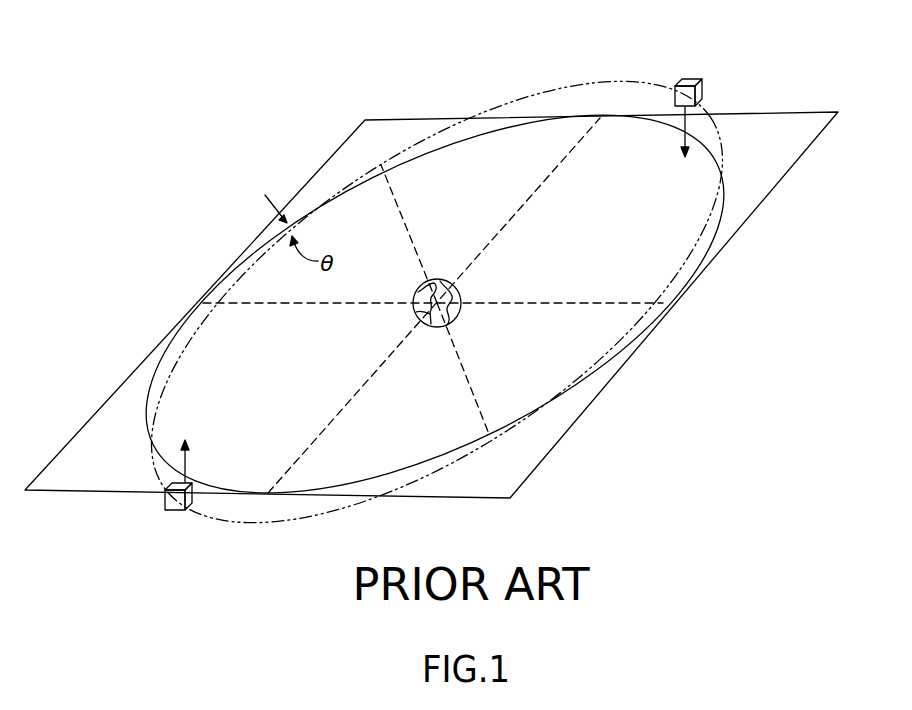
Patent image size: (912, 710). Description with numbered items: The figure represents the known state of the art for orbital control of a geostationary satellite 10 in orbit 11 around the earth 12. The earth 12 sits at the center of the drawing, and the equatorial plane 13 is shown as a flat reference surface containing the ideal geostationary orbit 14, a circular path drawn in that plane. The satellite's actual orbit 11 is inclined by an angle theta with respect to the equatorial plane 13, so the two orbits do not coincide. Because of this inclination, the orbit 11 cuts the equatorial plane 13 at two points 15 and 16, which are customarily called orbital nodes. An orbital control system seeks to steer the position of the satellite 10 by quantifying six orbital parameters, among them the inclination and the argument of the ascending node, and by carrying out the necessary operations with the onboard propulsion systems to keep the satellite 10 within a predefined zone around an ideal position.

The geostationary satellite 10 is at (165, 508).
The orbit 11 is at (530, 100).
The earth 12 is at (462, 297).
The equatorial plane 13 is at (745, 220).
The ideal geostationary orbit 14 is at (567, 397).
The orbital node 15 is at (487, 440).
The orbital node 16 is at (383, 168).